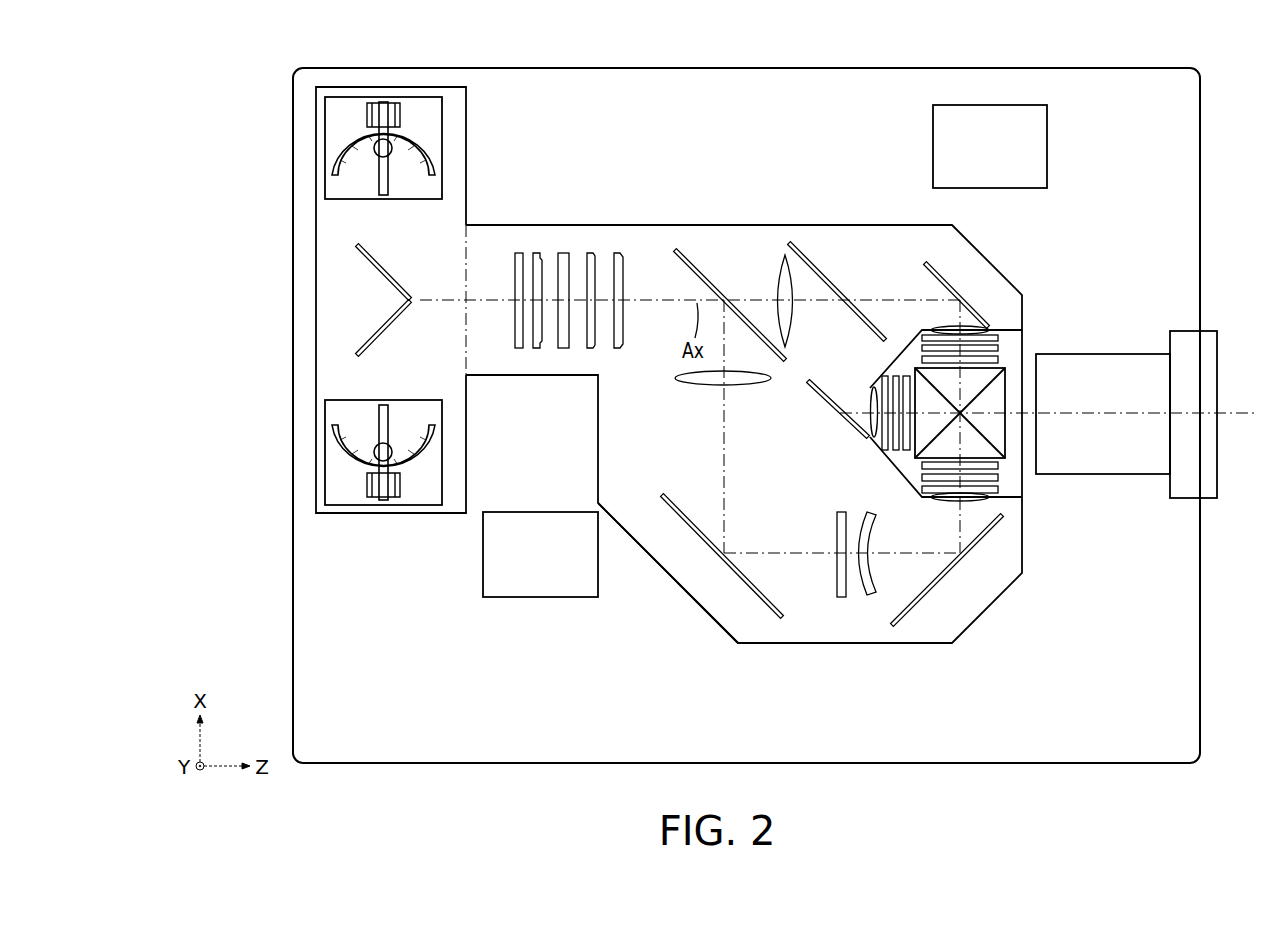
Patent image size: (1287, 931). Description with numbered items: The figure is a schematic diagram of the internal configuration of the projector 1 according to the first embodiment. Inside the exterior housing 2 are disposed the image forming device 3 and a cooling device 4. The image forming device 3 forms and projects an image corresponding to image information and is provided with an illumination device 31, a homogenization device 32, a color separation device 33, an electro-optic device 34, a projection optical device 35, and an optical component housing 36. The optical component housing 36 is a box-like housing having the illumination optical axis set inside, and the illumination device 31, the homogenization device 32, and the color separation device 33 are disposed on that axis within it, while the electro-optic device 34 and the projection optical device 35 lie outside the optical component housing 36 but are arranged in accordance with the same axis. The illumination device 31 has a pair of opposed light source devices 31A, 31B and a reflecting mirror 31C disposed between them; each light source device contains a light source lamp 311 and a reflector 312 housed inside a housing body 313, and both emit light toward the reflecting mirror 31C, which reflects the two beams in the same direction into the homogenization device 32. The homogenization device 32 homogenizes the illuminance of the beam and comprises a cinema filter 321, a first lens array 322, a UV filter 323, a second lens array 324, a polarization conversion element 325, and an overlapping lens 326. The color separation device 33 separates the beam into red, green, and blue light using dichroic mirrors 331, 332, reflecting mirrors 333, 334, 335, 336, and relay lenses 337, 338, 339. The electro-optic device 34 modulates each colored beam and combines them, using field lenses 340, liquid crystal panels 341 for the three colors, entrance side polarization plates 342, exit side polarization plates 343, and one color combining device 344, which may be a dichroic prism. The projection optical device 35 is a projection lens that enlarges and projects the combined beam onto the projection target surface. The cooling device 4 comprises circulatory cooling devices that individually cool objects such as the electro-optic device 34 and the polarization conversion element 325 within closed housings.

The projector 1 is at (1223, 122).
The exterior housing 2 is at (1120, 68).
The image forming device 3 is at (842, 156).
The cooling device 4 is at (1048, 143).
The illumination device 31 is at (328, 228).
The light source device 31A is at (527, 423).
The light source device 31B is at (527, 88).
The reflecting mirror 31C is at (386, 332).
The light source lamp 311 is at (388, 114).
The reflector 312 is at (416, 142).
The housing body 313 is at (434, 168).
The homogenization device 32 is at (500, 190).
The cinema filter 321 is at (519, 253).
The first lens array 322 is at (537, 253).
The UV filter 323 is at (563, 253).
The second lens array 324 is at (590, 253).
The polarization conversion element 325 is at (618, 253).
The overlapping lens 326 is at (783, 256).
The color separation device 33 is at (892, 243).
The dichroic mirror 331 is at (715, 276).
The dichroic mirror 332 is at (826, 280).
The reflecting mirror 333 is at (673, 500).
The reflecting mirror 334 is at (920, 600).
The reflecting mirror 335 is at (814, 390).
The reflecting mirror 336 is at (940, 270).
The relay lens 337 is at (700, 386).
The relay lens 338 is at (842, 600).
The relay lens 339 is at (876, 598).
The electro-optic device 34 is at (1005, 320).
The field lens 340 is at (945, 327).
The liquid crystal panel 341 is at (1000, 338).
The entrance side polarization plate 342 is at (917, 333).
The exit side polarization plate 343 is at (1000, 360).
The color combining device 344 is at (1006, 408).
The projection optical device 35 is at (1150, 354).
The optical component housing 36 is at (710, 601).